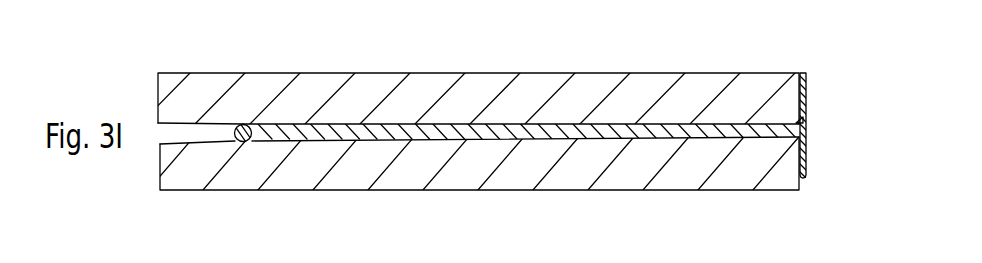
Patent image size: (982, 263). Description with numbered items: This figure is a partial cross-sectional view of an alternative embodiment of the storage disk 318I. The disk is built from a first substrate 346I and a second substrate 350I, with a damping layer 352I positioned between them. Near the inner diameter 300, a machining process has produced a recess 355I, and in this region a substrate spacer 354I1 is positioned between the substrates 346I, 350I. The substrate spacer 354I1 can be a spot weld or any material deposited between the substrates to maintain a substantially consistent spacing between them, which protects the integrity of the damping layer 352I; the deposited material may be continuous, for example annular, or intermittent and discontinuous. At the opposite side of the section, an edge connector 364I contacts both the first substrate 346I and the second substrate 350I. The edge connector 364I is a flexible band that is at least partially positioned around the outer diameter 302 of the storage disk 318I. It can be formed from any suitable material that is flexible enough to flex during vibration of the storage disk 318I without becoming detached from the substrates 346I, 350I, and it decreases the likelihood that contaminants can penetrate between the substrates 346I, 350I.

The inner diameter 300 is at (152, 102).
The storage disk 318I is at (710, 60).
The first substrate 346I is at (433, 88).
The second substrate 350I is at (418, 175).
The damping layer 352I is at (301, 132).
The spacer element 354I1 is at (234, 141).
The recess 355I is at (166, 133).
The outer diameter 302 is at (807, 74).
The edge connector 364I is at (806, 126).